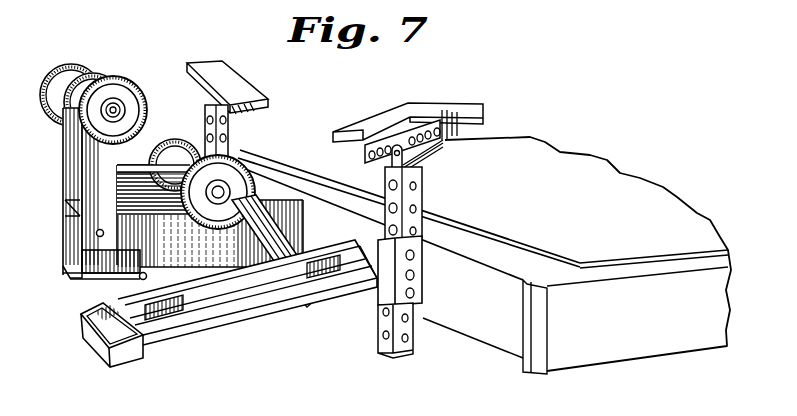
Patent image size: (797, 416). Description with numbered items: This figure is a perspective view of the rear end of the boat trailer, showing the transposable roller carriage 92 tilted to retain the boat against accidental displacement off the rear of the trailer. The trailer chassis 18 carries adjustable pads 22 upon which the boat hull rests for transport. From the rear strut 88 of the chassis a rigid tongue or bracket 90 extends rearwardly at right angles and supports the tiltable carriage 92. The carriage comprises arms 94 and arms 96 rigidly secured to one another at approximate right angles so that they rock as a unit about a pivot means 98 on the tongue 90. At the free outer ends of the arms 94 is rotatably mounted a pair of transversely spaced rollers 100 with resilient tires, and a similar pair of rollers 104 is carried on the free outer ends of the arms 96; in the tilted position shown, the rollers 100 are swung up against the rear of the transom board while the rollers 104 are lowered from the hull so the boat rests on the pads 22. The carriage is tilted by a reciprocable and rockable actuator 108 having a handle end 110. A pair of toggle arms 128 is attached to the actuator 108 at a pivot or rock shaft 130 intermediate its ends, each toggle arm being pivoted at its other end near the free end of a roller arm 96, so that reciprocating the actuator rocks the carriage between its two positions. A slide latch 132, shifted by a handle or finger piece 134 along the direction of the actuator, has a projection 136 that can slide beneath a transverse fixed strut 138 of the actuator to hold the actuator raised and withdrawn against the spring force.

The chassis 18 is at (698, 333).
The adjustable pads 22 is at (228, 78).
The rear strut 88 is at (482, 325).
The tongue or bracket 90 is at (72, 252).
The roller carriage 92 is at (98, 186).
The arms 94 is at (95, 155).
The arms 96 is at (135, 163).
The pivot means 98 is at (96, 233).
The rollers 100 is at (112, 62).
The rollers 104 is at (178, 145).
The actuator 108 is at (233, 322).
The handle end 110 is at (101, 350).
The toggle arms 128 is at (247, 270).
The pivot or rock shaft 130 is at (310, 303).
The slide latch 132 is at (98, 282).
The handle or finger piece 134 is at (139, 280).
The projection 136 is at (66, 272).
The transverse fixed strut 138 is at (182, 320).